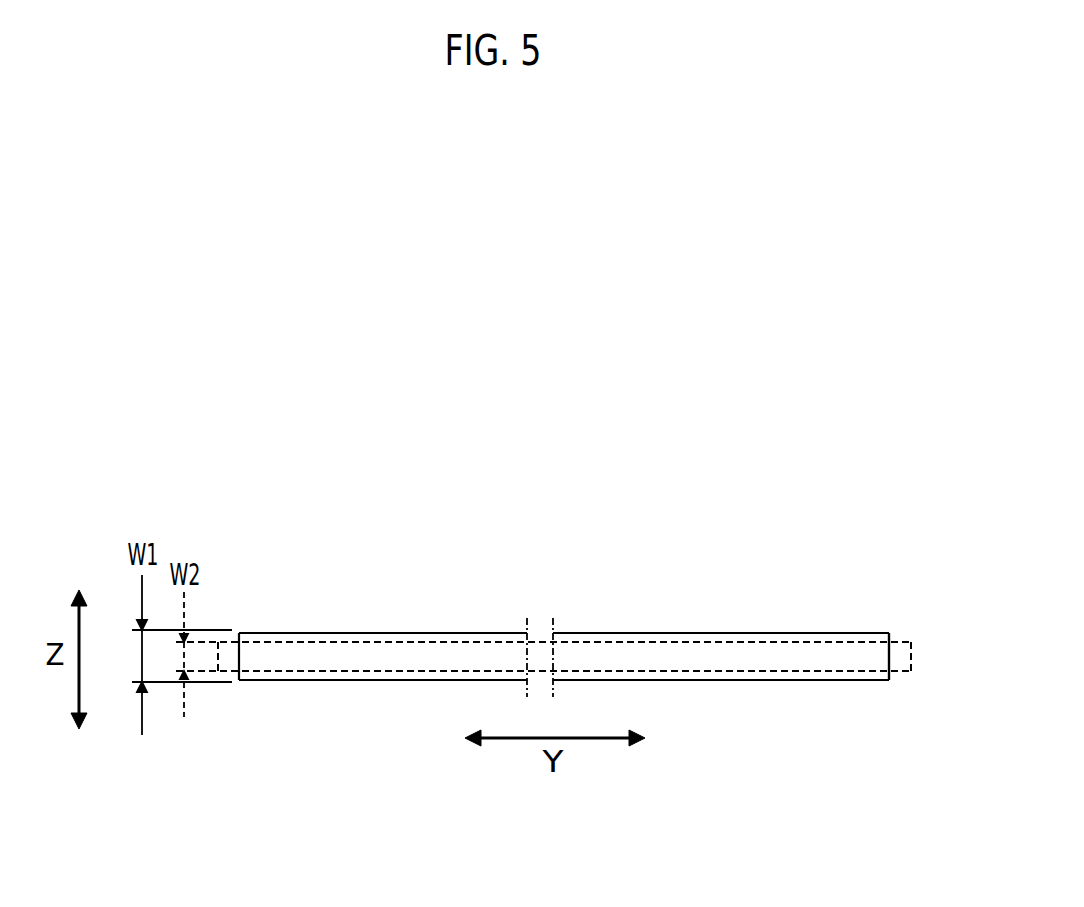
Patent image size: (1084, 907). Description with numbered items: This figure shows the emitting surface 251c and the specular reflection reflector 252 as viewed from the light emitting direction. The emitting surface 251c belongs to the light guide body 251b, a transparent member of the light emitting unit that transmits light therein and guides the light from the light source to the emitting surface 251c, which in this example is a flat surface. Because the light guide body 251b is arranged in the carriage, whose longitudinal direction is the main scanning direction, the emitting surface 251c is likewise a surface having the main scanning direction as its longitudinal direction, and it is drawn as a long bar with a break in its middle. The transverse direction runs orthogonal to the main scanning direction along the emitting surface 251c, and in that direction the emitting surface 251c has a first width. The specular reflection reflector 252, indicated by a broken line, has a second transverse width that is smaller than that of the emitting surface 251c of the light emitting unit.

The specular reflection reflector 252 is at (315, 657).
The emitting surface 251c is at (433, 655).
The light guide body 251b is at (889, 657).